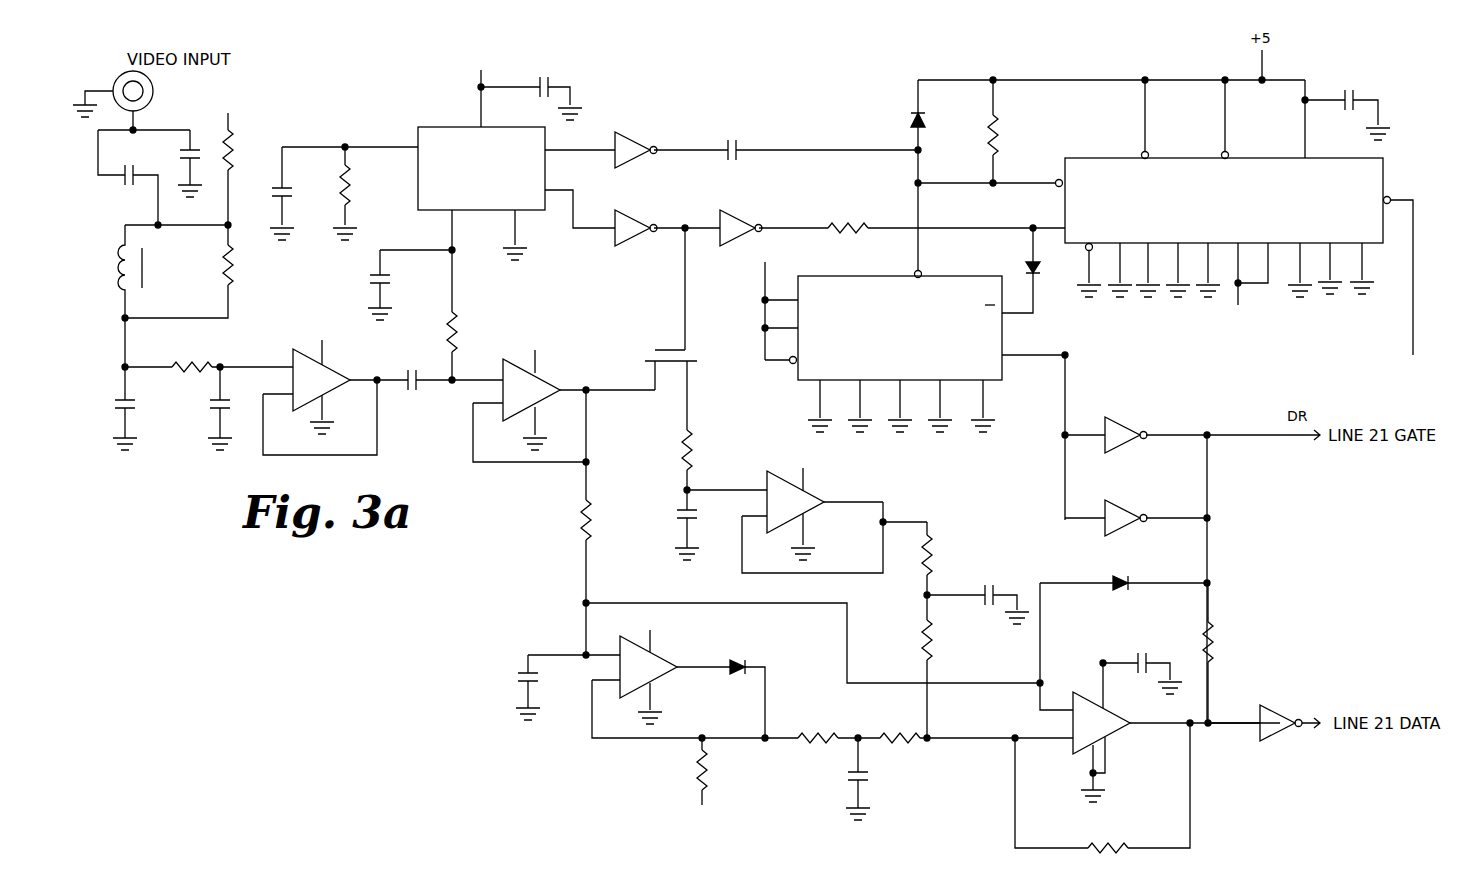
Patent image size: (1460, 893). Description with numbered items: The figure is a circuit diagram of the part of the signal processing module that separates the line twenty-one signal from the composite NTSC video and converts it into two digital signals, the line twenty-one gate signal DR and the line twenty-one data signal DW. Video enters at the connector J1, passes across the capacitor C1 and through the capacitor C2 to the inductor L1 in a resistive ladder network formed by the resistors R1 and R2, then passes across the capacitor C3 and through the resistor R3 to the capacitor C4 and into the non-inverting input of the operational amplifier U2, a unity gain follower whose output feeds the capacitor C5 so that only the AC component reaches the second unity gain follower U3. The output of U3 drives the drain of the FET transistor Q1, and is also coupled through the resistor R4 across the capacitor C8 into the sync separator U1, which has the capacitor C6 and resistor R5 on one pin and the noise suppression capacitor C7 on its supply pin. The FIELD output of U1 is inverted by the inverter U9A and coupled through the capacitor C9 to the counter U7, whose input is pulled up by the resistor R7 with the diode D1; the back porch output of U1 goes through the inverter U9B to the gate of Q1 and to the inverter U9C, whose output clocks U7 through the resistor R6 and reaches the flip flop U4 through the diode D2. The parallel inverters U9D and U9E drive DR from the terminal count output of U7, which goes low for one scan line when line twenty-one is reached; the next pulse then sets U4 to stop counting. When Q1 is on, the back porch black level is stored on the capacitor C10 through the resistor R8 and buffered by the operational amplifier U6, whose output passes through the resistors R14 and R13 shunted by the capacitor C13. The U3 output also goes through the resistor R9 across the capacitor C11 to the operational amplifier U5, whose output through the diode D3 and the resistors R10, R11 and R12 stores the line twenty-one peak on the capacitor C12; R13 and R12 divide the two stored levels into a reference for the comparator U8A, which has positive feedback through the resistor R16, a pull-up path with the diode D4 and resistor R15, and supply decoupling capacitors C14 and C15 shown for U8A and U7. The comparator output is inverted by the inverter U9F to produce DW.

The connector J1 is at (123, 102).
The 1.8 nF capacitor C1 is at (197, 163).
The 22 uF capacitor C2 is at (128, 177).
The 3.3 nF capacitor C3 is at (141, 408).
The 100 pF capacitor C4 is at (233, 408).
The 0.1 uF capacitor C5 is at (451, 370).
The 0.1 uF capacitor C6 is at (293, 193).
The 0.1 uF noise suppression capacitor C7 is at (531, 88).
The 1.8 nF capacitor C8 is at (410, 285).
The 330 pF capacitor C9 is at (819, 139).
The 0.1 uF capacitor C10 is at (705, 525).
The 100 pF capacitor C11 is at (544, 687).
The 1.8 nF capacitor C12 is at (875, 779).
The 0.1 uF capacitor C13 is at (978, 595).
The capacitor C14 is at (1142, 663).
The capacitor C15 is at (1347, 104).
The 100K resistor R1 is at (243, 159).
The 1K resistor R2 is at (246, 255).
The 1K resistor R3 is at (209, 355).
The 470 ohm resistor R4 is at (468, 315).
The 470K resistor R5 is at (357, 193).
The 2K2 resistor R6 is at (946, 214).
The 3K3 resistor R7 is at (1007, 131).
The 1K resistor R8 is at (702, 460).
The 1K resistor R9 is at (601, 532).
The 150K resistor R10 is at (718, 782).
The 51 ohm resistor R11 is at (839, 724).
The 10K resistor R12 is at (976, 724).
The 12K resistor R13 is at (946, 666).
The 470 ohm resistor R14 is at (947, 558).
The 470 ohm resistor R15 is at (1228, 653).
The 560K ohm resistor R16 is at (1102, 788).
The 45 microhenry inductor L1 is at (150, 271).
The diode D1 is at (930, 179).
The diode D2 is at (1033, 270).
The diode D3 is at (746, 688).
The diode D4 is at (1123, 572).
The 2N7000 FET transistor Q1 is at (681, 329).
The LM1881 sync separator U1 is at (506, 152).
The SE5534 operational amplifier U2 is at (335, 386).
The SE5534 operational amplifier U3 is at (564, 396).
The HC74 flip flop U4 is at (910, 336).
The LM6361 operational amplifier U5 is at (695, 673).
The LM358 operational amplifier U6 is at (807, 510).
The HC40103 counter U7 is at (1226, 217).
The LM319 voltage comparator U8A is at (1160, 692).
The digital logic inverter U9A is at (659, 138).
The inverter U9B is at (660, 214).
The inverter U9C is at (767, 216).
The inverter U9D is at (1192, 422).
The inverter U9E is at (1136, 506).
The digital logic inverter U9F is at (1264, 716).